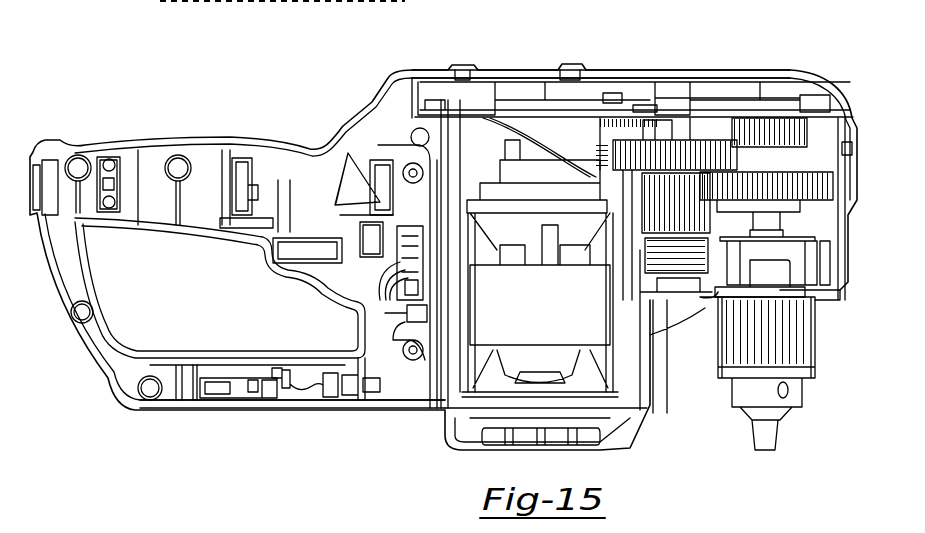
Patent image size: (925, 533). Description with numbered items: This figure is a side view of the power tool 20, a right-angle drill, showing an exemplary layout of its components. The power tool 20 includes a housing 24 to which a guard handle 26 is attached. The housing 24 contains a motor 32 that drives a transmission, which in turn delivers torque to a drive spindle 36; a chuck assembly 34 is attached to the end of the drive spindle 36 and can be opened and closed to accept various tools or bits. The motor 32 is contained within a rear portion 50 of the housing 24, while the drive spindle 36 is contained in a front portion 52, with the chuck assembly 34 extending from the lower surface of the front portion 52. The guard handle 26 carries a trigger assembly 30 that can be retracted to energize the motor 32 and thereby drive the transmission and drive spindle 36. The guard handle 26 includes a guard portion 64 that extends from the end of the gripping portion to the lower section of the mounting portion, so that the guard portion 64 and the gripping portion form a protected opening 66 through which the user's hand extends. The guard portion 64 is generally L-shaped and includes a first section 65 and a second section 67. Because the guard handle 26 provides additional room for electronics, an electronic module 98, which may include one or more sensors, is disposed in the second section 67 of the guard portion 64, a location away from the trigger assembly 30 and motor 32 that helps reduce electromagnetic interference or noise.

The power tool 20 is at (517, 42).
The housing 24 is at (635, 72).
The guard handle 26 is at (180, 155).
The trigger assembly 30 is at (323, 138).
The motor 32 is at (560, 312).
The chuck assembly 34 is at (727, 348).
The drive spindle 36 is at (745, 153).
The rear portion 50 is at (858, 76).
The front portion 52 is at (348, 80).
The guard portion 64 is at (195, 400).
The first section 65 is at (72, 318).
The protected opening 66 is at (216, 310).
The second section 67 is at (276, 400).
The electronic module 98 is at (240, 420).